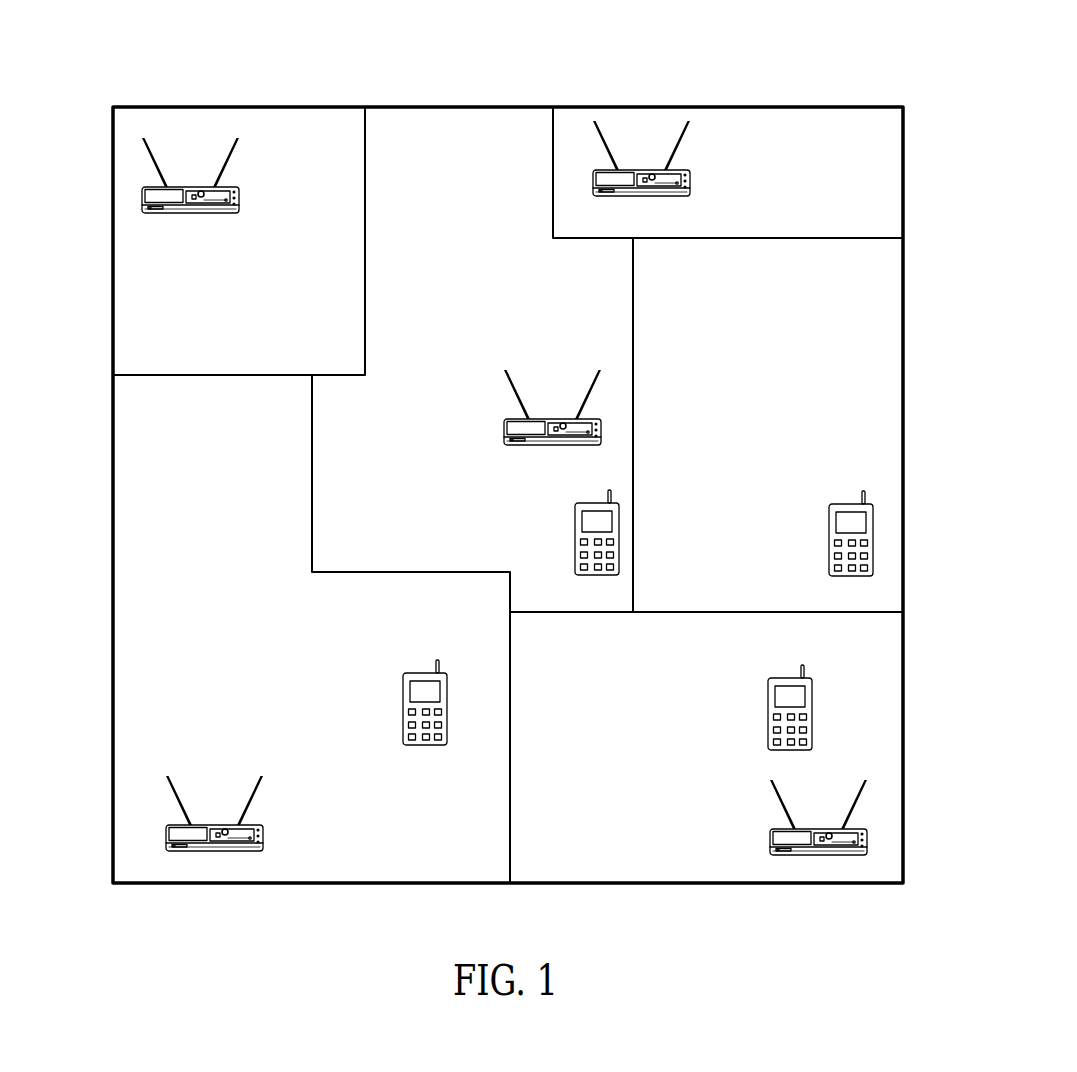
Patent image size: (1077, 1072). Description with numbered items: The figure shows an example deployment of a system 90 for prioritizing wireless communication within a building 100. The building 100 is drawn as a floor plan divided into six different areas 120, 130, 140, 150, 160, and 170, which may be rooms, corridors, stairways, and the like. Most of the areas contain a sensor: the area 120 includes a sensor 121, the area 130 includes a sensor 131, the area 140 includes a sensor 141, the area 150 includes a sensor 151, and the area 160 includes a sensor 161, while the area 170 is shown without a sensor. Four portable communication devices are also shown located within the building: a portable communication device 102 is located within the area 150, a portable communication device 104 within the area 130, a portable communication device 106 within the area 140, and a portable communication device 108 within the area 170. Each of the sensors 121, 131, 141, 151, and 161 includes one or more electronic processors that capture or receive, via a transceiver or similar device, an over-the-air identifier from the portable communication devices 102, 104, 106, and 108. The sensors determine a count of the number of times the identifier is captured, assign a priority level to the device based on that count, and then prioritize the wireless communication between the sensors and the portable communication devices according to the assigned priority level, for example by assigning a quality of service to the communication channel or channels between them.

The system 90 is at (871, 27).
The building 100 is at (508, 106).
The portable communication device 102 is at (575, 540).
The portable communication device 104 is at (403, 708).
The portable communication device 106 is at (812, 712).
The portable communication device 108 is at (829, 541).
The area 120 is at (118, 270).
The sensor 121 is at (240, 203).
The area 130 is at (118, 660).
The sensor 131 is at (264, 838).
The area 140 is at (888, 787).
The sensor 141 is at (770, 842).
The area 150 is at (410, 122).
The sensor 151 is at (504, 428).
The area 160 is at (888, 155).
The sensor 161 is at (692, 183).
The area 170 is at (888, 438).